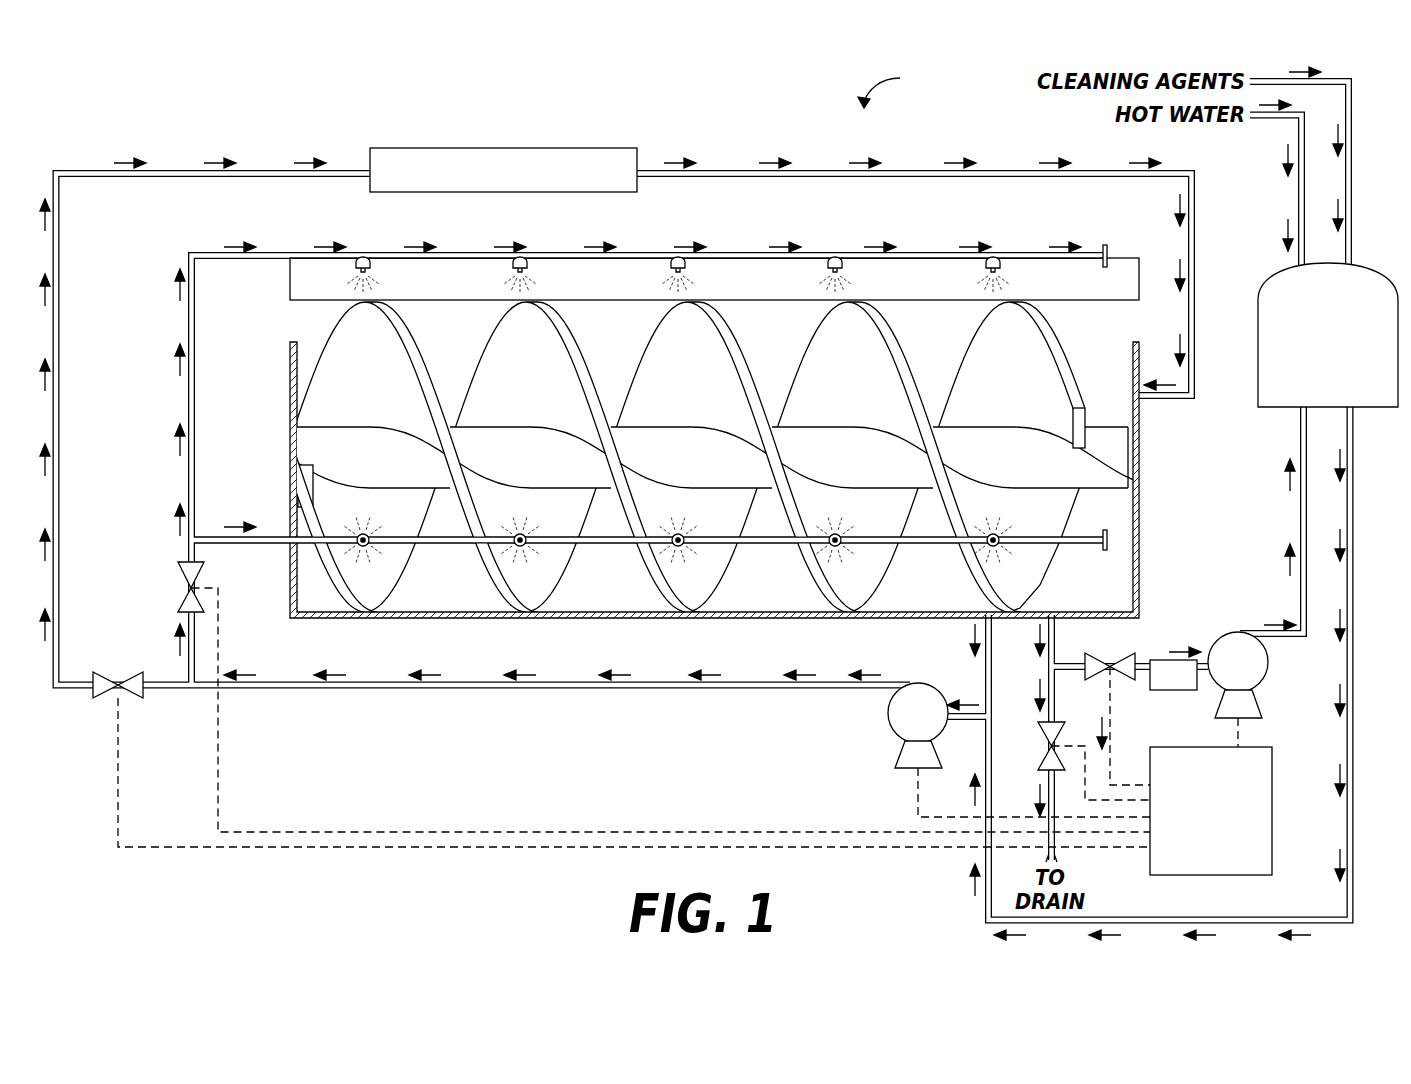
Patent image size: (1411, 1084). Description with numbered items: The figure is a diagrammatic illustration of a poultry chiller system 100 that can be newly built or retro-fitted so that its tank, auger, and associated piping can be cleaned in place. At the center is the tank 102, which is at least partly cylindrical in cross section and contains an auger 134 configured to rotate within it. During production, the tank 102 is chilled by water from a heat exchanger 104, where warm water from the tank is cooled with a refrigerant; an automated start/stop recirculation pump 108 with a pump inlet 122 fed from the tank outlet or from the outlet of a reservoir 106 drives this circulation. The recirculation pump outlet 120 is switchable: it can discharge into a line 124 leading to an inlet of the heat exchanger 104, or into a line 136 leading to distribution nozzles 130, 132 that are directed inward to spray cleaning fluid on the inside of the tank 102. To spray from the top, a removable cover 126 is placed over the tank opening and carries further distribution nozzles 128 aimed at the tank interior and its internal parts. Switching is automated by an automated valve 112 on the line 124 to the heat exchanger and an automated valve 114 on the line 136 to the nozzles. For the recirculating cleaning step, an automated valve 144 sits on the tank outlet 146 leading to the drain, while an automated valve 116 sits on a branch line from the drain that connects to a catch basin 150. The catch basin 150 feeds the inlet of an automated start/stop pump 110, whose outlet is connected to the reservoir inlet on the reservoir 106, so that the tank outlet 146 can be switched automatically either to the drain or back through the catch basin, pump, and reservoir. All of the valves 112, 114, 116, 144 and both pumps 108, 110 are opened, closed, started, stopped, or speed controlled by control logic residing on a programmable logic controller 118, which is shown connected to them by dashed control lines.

The poultry chiller system 100 is at (897, 85).
The tank 102 is at (1140, 440).
The heat exchanger 104 is at (640, 157).
The reservoir 106 is at (1352, 268).
The recirculation pump 108 is at (890, 725).
The automated start/stop pump 110 is at (1264, 680).
The automated valve 112 is at (112, 692).
The automated valve 114 is at (191, 588).
The automated valve 116 is at (1115, 662).
The programmable logic controller 118 is at (1272, 875).
The recirculation pump outlet 120 is at (845, 682).
The pump inlet 122 is at (965, 722).
The line 124 is at (59, 380).
The removable cover 126 is at (568, 275).
The distribution nozzles 128 is at (362, 260).
The distribution nozzles 130 is at (678, 585).
The distribution nozzles 132 is at (520, 547).
The auger 134 is at (892, 342).
The line 136 is at (188, 482).
The automated valve 144 is at (1051, 745).
The tank outlet 146 is at (1055, 632).
The catch basin 150 is at (1172, 690).